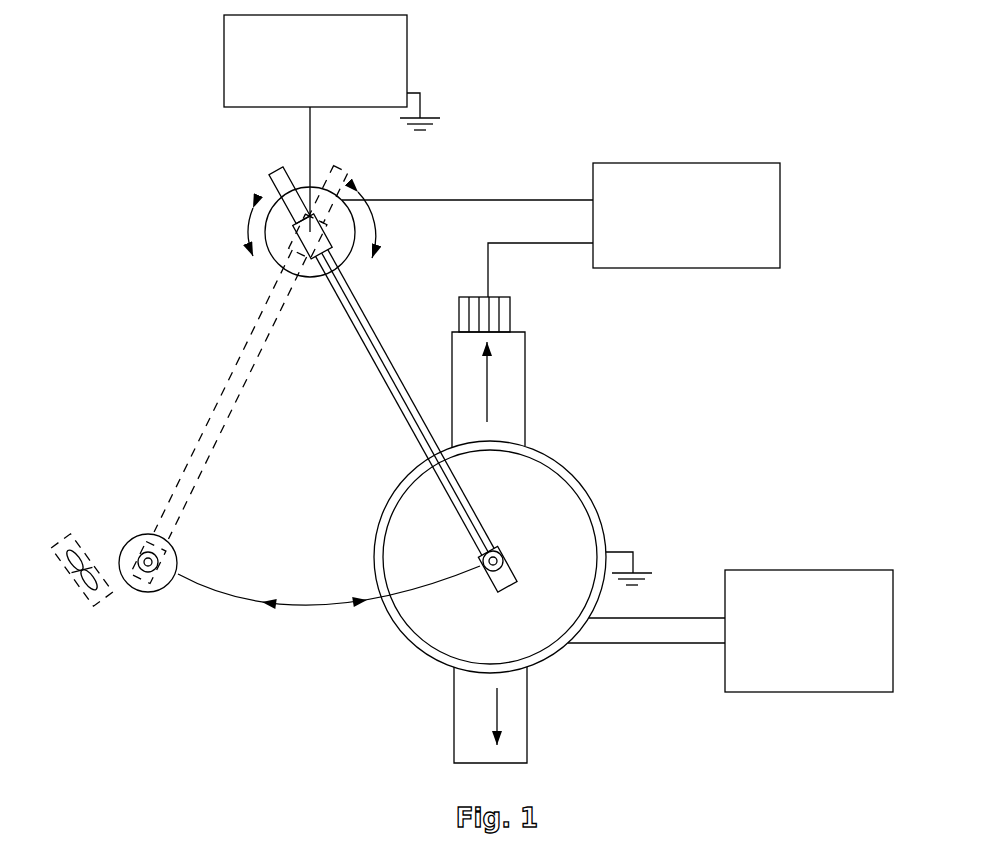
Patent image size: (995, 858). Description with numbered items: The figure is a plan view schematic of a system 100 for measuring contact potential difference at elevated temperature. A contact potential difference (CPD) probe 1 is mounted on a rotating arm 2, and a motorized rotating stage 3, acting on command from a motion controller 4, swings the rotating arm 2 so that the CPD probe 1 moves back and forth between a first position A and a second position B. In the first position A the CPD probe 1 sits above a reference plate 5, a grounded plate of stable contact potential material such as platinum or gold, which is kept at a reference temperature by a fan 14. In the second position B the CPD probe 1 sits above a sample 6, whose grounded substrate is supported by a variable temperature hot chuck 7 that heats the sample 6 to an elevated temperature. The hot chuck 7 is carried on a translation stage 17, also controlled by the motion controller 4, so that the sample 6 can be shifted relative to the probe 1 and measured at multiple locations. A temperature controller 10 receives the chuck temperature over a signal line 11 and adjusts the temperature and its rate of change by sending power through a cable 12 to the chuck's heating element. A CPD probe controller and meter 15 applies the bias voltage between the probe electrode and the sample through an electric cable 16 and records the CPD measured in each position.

The contact potential difference probe 1 is at (478, 558).
The rotating arm 2 is at (372, 362).
The motorized rotating stage 3 is at (362, 224).
The motion controller 4 is at (688, 190).
The reference plate 5 is at (128, 536).
The sample 6 is at (541, 548).
The variable temperature hot chuck 7 is at (573, 465).
The temperature controller 10 is at (802, 602).
The signal line 11 is at (634, 608).
The cable 12 is at (618, 650).
The fan 14 is at (60, 529).
The CPD probe controller and meter 15 is at (408, 82).
The electric cable 16 is at (308, 145).
The translation stage 17 is at (497, 400).
The system 100 is at (450, 398).